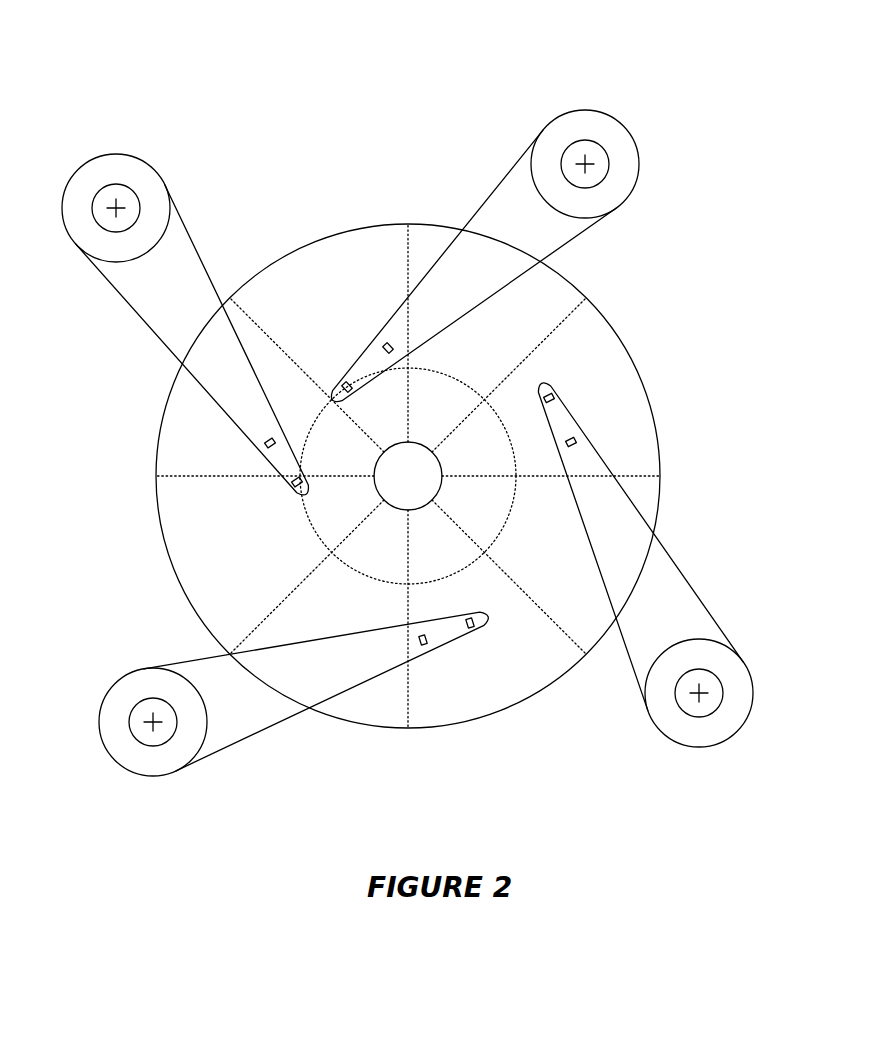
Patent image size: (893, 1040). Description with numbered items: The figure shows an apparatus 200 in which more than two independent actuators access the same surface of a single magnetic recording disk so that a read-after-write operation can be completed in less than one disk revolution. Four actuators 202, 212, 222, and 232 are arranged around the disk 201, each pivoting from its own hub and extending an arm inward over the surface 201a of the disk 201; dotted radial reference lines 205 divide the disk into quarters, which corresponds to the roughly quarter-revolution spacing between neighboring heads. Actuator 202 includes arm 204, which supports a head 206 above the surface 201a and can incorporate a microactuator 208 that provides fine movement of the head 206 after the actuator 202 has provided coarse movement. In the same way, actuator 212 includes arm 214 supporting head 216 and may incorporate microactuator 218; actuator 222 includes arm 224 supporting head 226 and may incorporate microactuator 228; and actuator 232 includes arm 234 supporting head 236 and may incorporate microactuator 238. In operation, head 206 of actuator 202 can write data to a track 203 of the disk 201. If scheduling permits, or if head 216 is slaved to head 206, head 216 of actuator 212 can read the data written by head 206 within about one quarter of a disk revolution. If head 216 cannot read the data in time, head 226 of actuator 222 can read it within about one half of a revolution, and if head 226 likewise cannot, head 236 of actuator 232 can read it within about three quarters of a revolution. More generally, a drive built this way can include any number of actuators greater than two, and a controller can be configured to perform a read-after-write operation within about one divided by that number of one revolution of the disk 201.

The apparatus 200 is at (363, 78).
The disk 201 is at (457, 476).
The surface of disk 201a is at (605, 353).
The track 203 is at (312, 532).
The radial reference line 205 is at (563, 324).
The actuator 202 is at (597, 113).
The arm 204 is at (502, 204).
The head 206 is at (344, 388).
The microactuator 208 is at (388, 344).
The actuator 212 is at (133, 156).
The arm 214 is at (183, 254).
The head 216 is at (294, 489).
The microactuator 218 is at (263, 446).
The actuator 222 is at (102, 698).
The arm 224 is at (250, 741).
The head 226 is at (473, 630).
The microactuator 228 is at (424, 647).
The actuator 232 is at (656, 719).
The arm 234 is at (687, 605).
The head 236 is at (552, 393).
The microactuator 238 is at (576, 435).